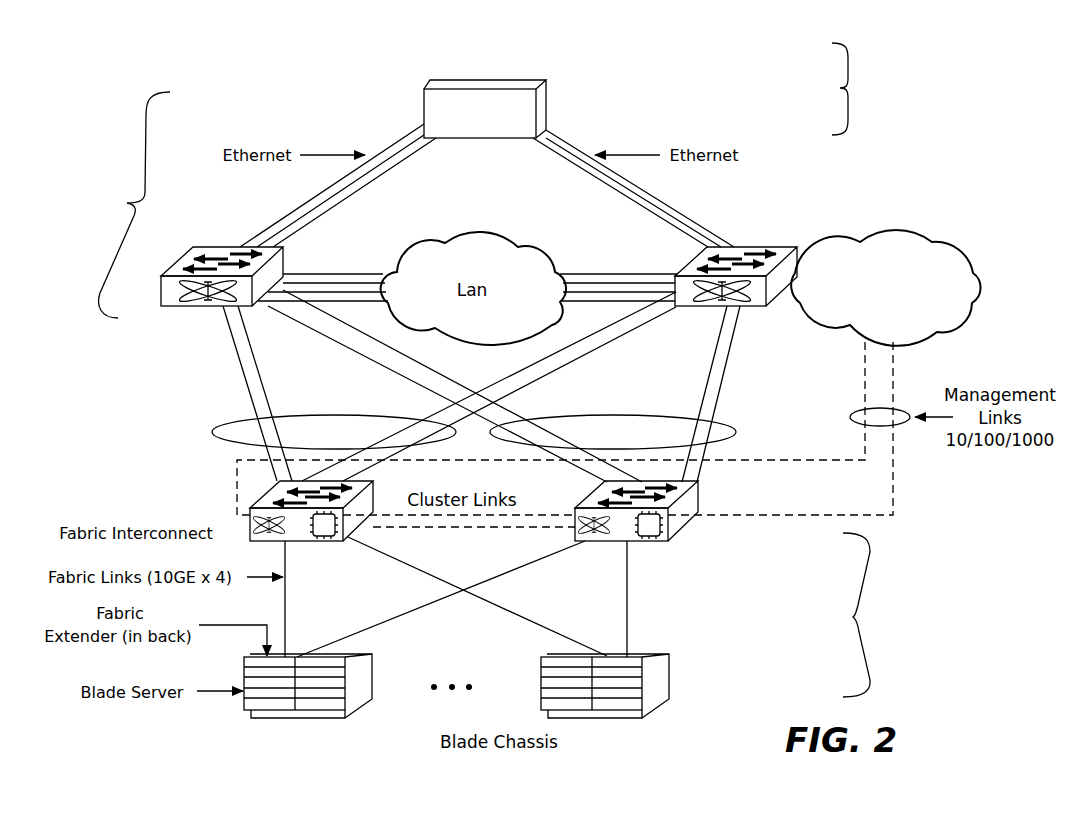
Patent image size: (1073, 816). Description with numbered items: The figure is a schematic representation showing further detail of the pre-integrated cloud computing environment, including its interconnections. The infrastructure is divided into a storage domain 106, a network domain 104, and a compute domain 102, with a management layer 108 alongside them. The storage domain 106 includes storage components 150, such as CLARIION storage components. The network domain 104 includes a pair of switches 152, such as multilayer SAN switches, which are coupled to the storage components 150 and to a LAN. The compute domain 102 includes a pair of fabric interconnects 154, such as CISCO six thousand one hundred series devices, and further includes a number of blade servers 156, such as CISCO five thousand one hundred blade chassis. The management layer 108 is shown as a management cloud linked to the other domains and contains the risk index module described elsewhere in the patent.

The storage components 150 is at (530, 89).
The switches 152 is at (206, 247).
The fabric interconnects 154 is at (308, 541).
The blade servers 156 is at (288, 718).
The compute domain 102 is at (908, 649).
The network domain 104 is at (73, 231).
The storage domain 106 is at (881, 119).
The management layer 108 is at (977, 275).